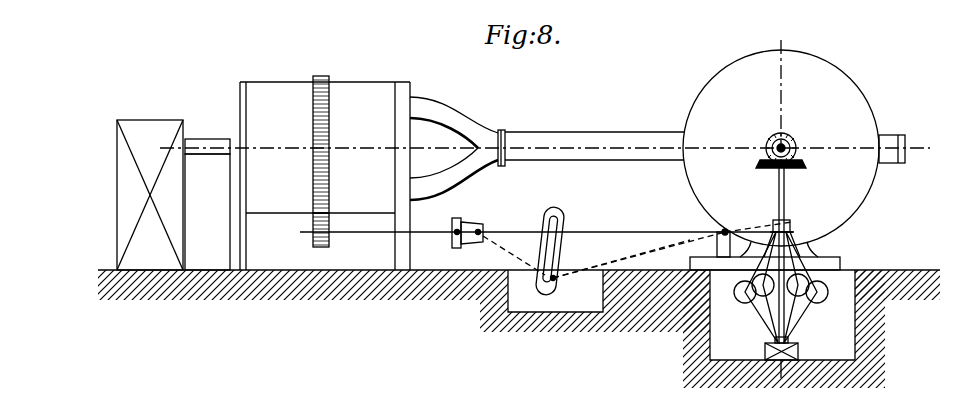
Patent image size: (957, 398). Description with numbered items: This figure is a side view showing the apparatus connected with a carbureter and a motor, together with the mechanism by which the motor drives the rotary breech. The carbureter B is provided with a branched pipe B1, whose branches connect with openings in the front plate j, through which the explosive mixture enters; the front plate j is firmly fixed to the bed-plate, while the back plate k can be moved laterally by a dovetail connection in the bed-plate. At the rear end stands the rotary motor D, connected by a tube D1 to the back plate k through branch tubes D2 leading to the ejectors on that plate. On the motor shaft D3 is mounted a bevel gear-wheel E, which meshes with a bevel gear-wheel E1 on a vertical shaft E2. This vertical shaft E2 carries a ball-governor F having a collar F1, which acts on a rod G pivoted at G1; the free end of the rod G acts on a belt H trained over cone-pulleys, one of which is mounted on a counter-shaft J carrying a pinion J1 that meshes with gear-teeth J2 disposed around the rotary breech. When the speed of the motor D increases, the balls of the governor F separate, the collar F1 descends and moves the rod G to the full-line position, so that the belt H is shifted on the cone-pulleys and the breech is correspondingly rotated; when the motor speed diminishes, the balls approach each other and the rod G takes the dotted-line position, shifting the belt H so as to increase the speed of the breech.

The carbureter B is at (136, 195).
The branched pipe B1 is at (204, 139).
The front plate j is at (244, 82).
The back plate k is at (405, 82).
The counter-shaft J is at (390, 224).
The gear-teeth J2 is at (312, 190).
The pinion J1 is at (312, 243).
The branch tubes D2 is at (456, 113).
The tube D1 is at (588, 132).
The rotary motor D is at (794, 143).
The motor shaft D3 is at (797, 139).
The bevel gear-wheel E is at (770, 142).
The bevel gear-wheel E1 is at (766, 174).
The vertical shaft E2 is at (778, 206).
The collar F1 is at (792, 226).
The ball-governor F is at (752, 304).
The rod G is at (546, 217).
The pivot G1 is at (720, 230).
The belt H is at (455, 246).